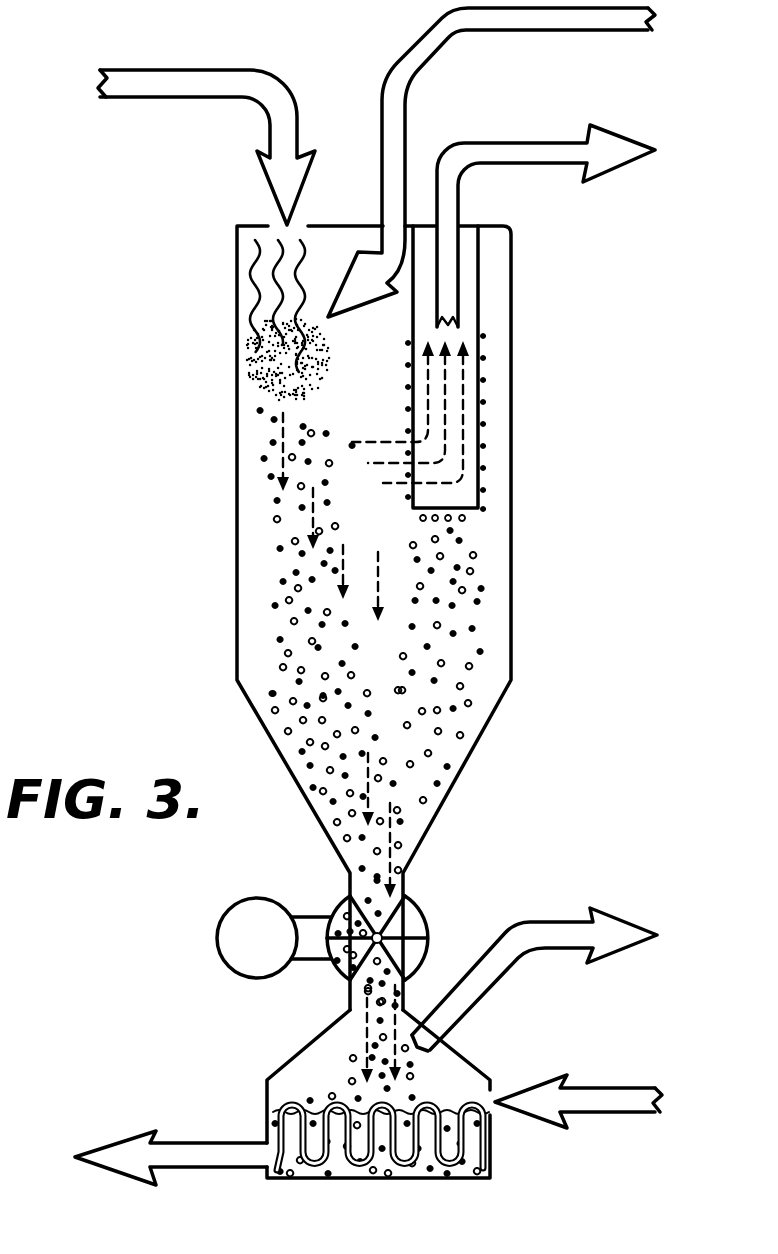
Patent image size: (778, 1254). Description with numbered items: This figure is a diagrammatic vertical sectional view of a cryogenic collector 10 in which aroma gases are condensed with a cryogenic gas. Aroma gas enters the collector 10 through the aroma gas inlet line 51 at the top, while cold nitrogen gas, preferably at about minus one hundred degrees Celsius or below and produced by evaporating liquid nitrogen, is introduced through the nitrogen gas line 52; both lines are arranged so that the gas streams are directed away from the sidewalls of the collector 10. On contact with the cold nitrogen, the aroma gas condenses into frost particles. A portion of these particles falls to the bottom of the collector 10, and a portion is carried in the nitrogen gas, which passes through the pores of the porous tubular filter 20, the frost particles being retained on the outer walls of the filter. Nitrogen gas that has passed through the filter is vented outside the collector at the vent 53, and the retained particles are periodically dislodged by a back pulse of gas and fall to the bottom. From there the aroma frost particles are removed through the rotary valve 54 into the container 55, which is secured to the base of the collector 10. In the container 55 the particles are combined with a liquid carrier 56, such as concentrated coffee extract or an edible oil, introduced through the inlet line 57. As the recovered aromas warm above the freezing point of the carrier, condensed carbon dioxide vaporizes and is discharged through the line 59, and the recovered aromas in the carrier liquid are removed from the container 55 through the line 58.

The cryogenic collector 10 is at (184, 458).
The porous tubular filter 20 is at (470, 508).
The aroma gas inlet line 51 is at (223, 70).
The nitrogen gas line 52 is at (405, 110).
The vent 53 is at (553, 163).
The rotary valve 54 is at (405, 930).
The container 55 is at (310, 1038).
The liquid carrier 56 is at (471, 1180).
The inlet line 57 is at (607, 1088).
The line 58 is at (190, 1168).
The line 59 is at (500, 978).